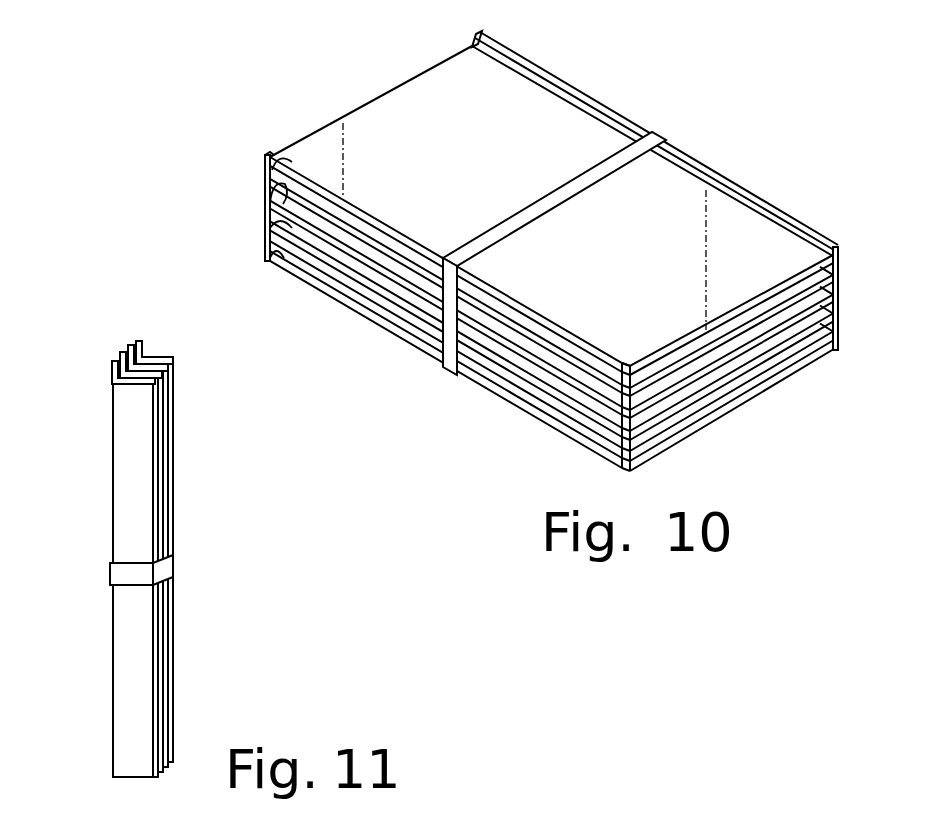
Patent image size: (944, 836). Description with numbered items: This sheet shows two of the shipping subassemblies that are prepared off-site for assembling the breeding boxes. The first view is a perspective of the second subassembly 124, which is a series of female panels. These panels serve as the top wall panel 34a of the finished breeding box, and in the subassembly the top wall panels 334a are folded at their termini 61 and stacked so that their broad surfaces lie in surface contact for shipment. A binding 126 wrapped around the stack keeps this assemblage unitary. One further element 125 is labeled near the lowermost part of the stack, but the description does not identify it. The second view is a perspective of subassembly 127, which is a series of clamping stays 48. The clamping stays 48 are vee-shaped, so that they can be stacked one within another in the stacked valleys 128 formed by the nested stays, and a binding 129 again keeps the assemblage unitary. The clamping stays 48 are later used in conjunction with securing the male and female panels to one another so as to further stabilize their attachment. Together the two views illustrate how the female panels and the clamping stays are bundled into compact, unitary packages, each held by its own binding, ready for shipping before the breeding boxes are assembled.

In FIG. 10, the second subassembly 124 is at (768, 150).
In FIG. 10, the top wall panel 334a is at (425, 100).
In FIG. 10, the top wall panel 34a is at (523, 56).
In FIG. 10, the termini 61 is at (303, 158).
In FIG. 10, the binding 126 is at (661, 134).
In FIG. 10, the bottom plate 125 is at (750, 386).
In FIG. 11, the subassembly 127 is at (96, 344).
In FIG. 11, the stacked valleys 128 is at (143, 355).
In FIG. 11, the clamping stay 48 is at (178, 470).
In FIG. 11, the binding 129 is at (176, 565).